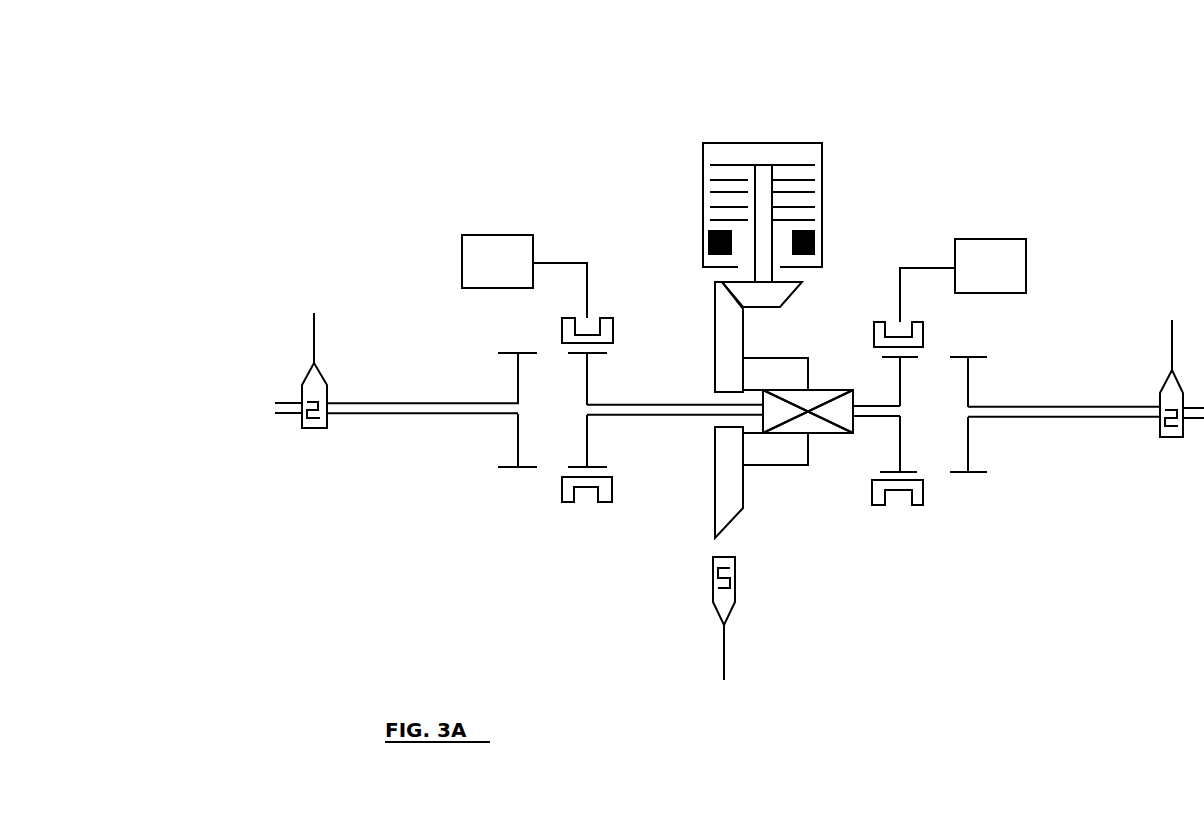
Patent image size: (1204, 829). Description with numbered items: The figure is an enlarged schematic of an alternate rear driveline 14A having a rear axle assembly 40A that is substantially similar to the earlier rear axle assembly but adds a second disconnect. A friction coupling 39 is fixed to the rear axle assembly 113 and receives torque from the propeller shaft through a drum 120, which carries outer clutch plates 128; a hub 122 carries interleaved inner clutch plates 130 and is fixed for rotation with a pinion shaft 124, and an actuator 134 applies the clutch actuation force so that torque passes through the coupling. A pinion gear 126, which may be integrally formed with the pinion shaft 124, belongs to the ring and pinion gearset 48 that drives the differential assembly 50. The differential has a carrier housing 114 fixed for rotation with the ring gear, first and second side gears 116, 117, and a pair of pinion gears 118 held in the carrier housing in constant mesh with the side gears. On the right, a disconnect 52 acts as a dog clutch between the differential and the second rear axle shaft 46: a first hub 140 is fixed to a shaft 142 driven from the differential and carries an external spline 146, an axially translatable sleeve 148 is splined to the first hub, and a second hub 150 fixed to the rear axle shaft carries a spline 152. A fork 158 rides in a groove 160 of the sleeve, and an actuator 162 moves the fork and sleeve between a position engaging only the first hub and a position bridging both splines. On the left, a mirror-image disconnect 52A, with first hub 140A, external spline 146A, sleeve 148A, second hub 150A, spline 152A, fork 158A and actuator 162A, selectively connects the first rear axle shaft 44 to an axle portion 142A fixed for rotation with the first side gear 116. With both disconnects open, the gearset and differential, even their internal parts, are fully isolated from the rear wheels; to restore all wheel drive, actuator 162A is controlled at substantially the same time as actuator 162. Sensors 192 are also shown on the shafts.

The rear axle assembly 40A is at (500, 123).
The friction coupling 39 is at (849, 158).
The rear driveline 14A is at (959, 190).
The rear axle assembly 113 is at (402, 488).
The drum 120 is at (703, 152).
The hub 122 is at (788, 165).
The pinion shaft 124 is at (762, 190).
The pinion gear 126 is at (750, 295).
The outer clutch plates 128 is at (802, 180).
The inner clutch plates 130 is at (730, 222).
The actuator 134 is at (815, 245).
The ring and pinion gearset 48 is at (680, 339).
The differential assembly 50 is at (848, 373).
The carrier housing 114 is at (754, 358).
The first side gear 116 is at (757, 390).
The second side gear 117 is at (845, 410).
The pinion gears 118 is at (823, 397).
The first rear axle shaft 44 is at (393, 403).
The second rear axle shaft 46 is at (1126, 413).
The axle portion 142A is at (648, 404).
The shaft 142 is at (860, 418).
The disconnect 52A is at (530, 512).
The disconnect 52 is at (955, 519).
The first hub 140A is at (588, 437).
The first hub 140 is at (893, 450).
The external spline 146A is at (596, 478).
The external spline 146 is at (905, 472).
The sleeve 148A is at (570, 337).
The sleeve 148 is at (917, 340).
The second hub 150A is at (518, 435).
The second hub 150 is at (968, 437).
The spline 152A is at (506, 470).
The spline 152 is at (977, 472).
The fork 158A is at (587, 302).
The fork 158 is at (893, 300).
The groove 160 is at (887, 498).
The actuator 162A is at (468, 268).
The actuator 162 is at (1018, 272).
The speed sensor 192 is at (318, 428).